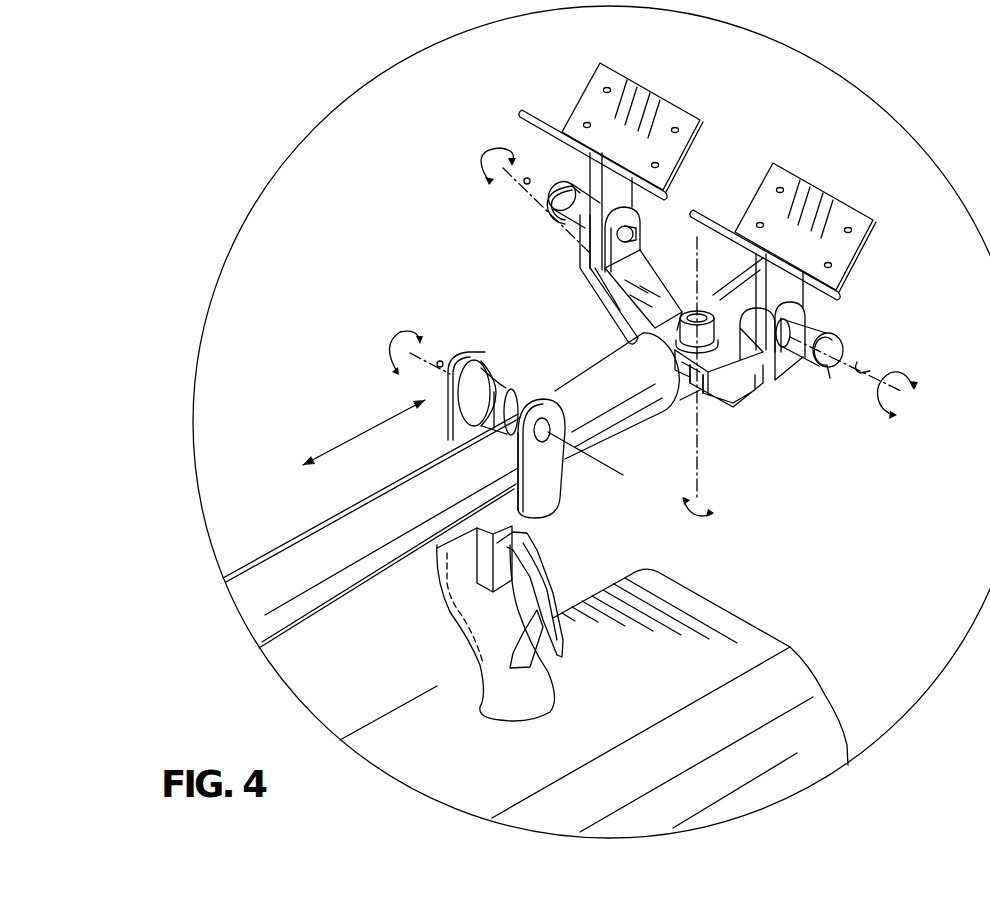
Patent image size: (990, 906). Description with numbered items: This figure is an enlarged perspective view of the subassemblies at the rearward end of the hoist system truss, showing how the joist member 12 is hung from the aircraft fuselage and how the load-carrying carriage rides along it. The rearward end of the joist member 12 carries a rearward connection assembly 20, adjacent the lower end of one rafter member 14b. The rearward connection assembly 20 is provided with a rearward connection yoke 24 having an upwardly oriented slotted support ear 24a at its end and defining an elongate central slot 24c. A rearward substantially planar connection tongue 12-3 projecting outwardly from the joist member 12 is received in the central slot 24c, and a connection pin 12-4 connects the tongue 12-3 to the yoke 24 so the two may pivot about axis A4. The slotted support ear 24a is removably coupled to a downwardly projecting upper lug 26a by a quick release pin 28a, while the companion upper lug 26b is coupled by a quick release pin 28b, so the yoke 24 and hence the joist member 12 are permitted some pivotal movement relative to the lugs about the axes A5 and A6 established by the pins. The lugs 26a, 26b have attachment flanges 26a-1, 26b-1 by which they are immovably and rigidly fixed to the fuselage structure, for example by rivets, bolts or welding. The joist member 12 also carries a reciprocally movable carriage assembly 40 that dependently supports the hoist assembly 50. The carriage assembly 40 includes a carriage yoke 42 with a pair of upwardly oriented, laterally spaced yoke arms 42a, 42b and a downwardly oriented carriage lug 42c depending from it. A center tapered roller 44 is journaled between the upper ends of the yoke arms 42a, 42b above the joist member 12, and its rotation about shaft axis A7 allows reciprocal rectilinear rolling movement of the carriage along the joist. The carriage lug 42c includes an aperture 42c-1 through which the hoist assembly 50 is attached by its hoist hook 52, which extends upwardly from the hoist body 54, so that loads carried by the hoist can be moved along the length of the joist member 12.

The joist member 12 is at (378, 536).
The connection tongue 12-3 is at (707, 400).
The connection pin 12-4 is at (712, 322).
The rafter member 14b is at (578, 256).
The rearward connection assembly 20 is at (568, 287).
The rearward connection yoke 24 is at (662, 322).
The slotted support ear 24a is at (780, 368).
The central slot 24c is at (680, 365).
The upper lug 26a is at (846, 301).
The attachment flange 26a-1 is at (868, 240).
The upper lug 26b is at (636, 203).
The attachment flange 26b-1 is at (700, 131).
The quick release pin 28a is at (822, 348).
The quick release pin 28b is at (565, 226).
The carriage assembly 40 is at (368, 368).
The carriage yoke 42 is at (543, 524).
The yoke arm 42a is at (547, 467).
The yoke arm 42b is at (450, 428).
The carriage lug 42c is at (480, 567).
The aperture 42c-1 is at (520, 503).
The center tapered roller 44 is at (504, 378).
The hoist assembly 50 is at (760, 628).
The hoist hook 52 is at (477, 637).
The hoist body 54 is at (630, 722).
The pivot axis A4 is at (712, 463).
The pivot axis A5 is at (858, 367).
The pivot axis A6 is at (522, 187).
The shaft axis A7 is at (438, 368).